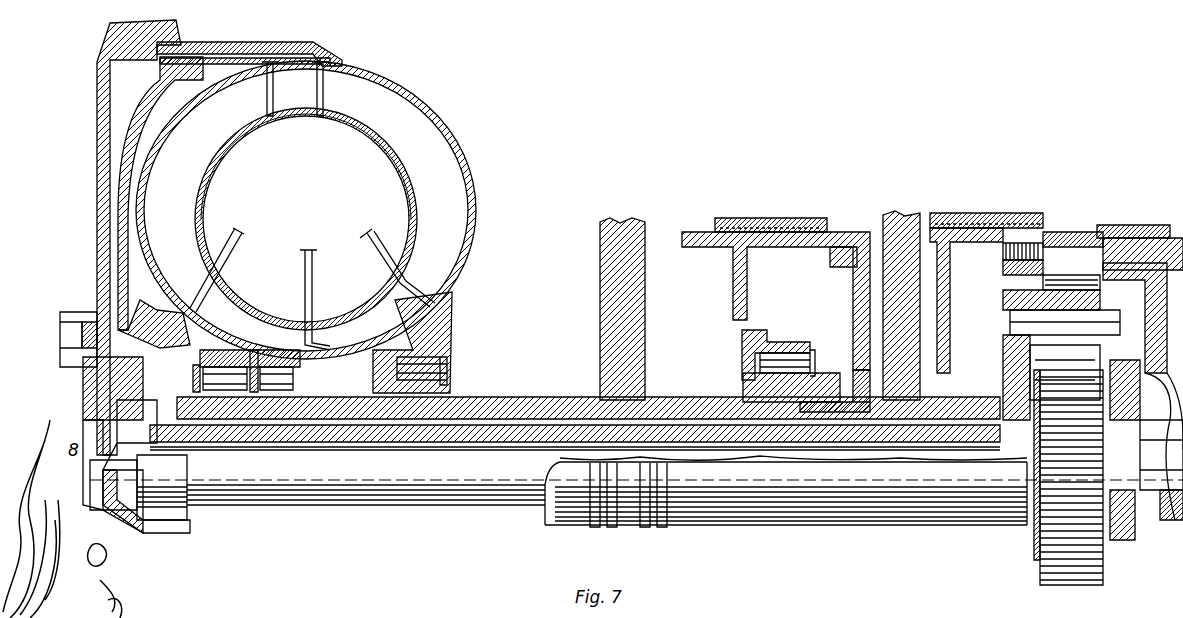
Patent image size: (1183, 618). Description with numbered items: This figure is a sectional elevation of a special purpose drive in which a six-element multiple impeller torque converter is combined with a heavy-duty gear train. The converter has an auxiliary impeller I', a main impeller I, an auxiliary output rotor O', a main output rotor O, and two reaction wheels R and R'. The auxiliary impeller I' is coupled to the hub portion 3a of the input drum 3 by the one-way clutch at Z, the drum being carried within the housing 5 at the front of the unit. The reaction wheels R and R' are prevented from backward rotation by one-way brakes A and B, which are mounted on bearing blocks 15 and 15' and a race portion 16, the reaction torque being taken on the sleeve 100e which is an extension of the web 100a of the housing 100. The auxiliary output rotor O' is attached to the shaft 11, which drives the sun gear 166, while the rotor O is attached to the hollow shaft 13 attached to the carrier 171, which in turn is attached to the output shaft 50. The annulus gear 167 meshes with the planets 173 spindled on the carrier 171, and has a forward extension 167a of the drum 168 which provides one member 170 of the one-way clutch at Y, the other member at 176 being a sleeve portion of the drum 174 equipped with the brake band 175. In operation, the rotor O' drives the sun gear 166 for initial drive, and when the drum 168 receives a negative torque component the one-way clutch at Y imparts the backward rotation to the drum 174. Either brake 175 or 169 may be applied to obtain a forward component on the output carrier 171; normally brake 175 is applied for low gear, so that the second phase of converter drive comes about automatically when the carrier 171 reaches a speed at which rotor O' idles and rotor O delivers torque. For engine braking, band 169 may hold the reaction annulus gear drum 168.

The input drum 3 is at (278, 45).
The hub portion of input drum 3a is at (437, 310).
The housing 5 is at (160, 92).
The main output rotor O is at (305, 166).
The auxiliary output rotor O' is at (295, 106).
The main impeller I is at (308, 219).
The auxiliary impeller I' is at (391, 251).
The reaction wheel R is at (228, 262).
The reaction wheel R' is at (315, 281).
The bearing block 15 is at (250, 326).
The bearing divider 15' is at (269, 342).
The one-way brake A is at (240, 355).
The one-way brake B is at (283, 357).
The race portion 16 is at (187, 387).
The one-way clutch Z is at (448, 360).
The sleeve 100e is at (513, 410).
The hollow shaft 13 is at (553, 433).
The shaft 11 is at (455, 477).
The housing 100 is at (654, 219).
The web of housing 100a is at (600, 245).
The drum 174 is at (838, 238).
The brake band 175 is at (752, 218).
The member of one-way clutch 170 is at (783, 360).
The one-way clutch Y is at (762, 365).
The sleeve portion of drum 176 is at (743, 383).
The forward extension of drum 167a is at (843, 380).
The drum 168 is at (942, 238).
The brake band 169 is at (1002, 215).
The annulus gear 167 is at (1043, 277).
The planets 173 is at (1050, 333).
The carrier 171 is at (1027, 360).
The sun gear 166 is at (1057, 530).
The output shaft 50 is at (1150, 517).